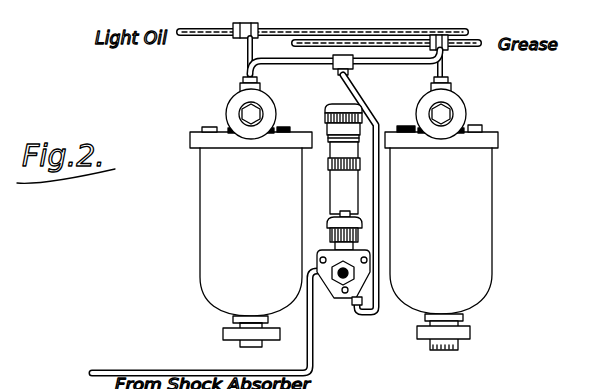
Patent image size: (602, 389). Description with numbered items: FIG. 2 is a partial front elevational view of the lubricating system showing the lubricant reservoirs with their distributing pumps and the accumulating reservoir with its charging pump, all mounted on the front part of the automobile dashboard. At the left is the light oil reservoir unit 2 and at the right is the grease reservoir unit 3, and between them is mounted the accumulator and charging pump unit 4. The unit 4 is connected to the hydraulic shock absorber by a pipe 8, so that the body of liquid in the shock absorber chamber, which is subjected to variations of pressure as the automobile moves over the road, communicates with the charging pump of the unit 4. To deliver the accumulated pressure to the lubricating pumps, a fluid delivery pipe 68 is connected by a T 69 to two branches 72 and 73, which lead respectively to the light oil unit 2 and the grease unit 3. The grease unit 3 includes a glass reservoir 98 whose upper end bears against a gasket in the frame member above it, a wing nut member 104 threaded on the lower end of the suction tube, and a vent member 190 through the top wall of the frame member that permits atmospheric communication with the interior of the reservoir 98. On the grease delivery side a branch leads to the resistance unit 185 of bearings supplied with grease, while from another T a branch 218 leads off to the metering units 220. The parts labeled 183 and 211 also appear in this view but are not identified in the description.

The light oil reservoir unit 2 is at (232, 212).
The grease reservoir unit 3 is at (468, 213).
The accumulator and charging pump unit 4 is at (322, 204).
The pipe 8 is at (110, 370).
The fluid delivery pipe 68 is at (378, 301).
The T 69 is at (338, 71).
The branch 72 is at (246, 57).
The branch 73 is at (444, 67).
The glass reservoir 98 is at (493, 286).
The wing nut member 104 is at (470, 322).
The grease supply pipe fitting 183 is at (450, 47).
The resistance unit 185 is at (562, 388).
The vent member 190 is at (483, 128).
The light oil filter drain fitting 211 is at (225, 323).
The branch 218 is at (510, 388).
The metering units 220 is at (512, 388).